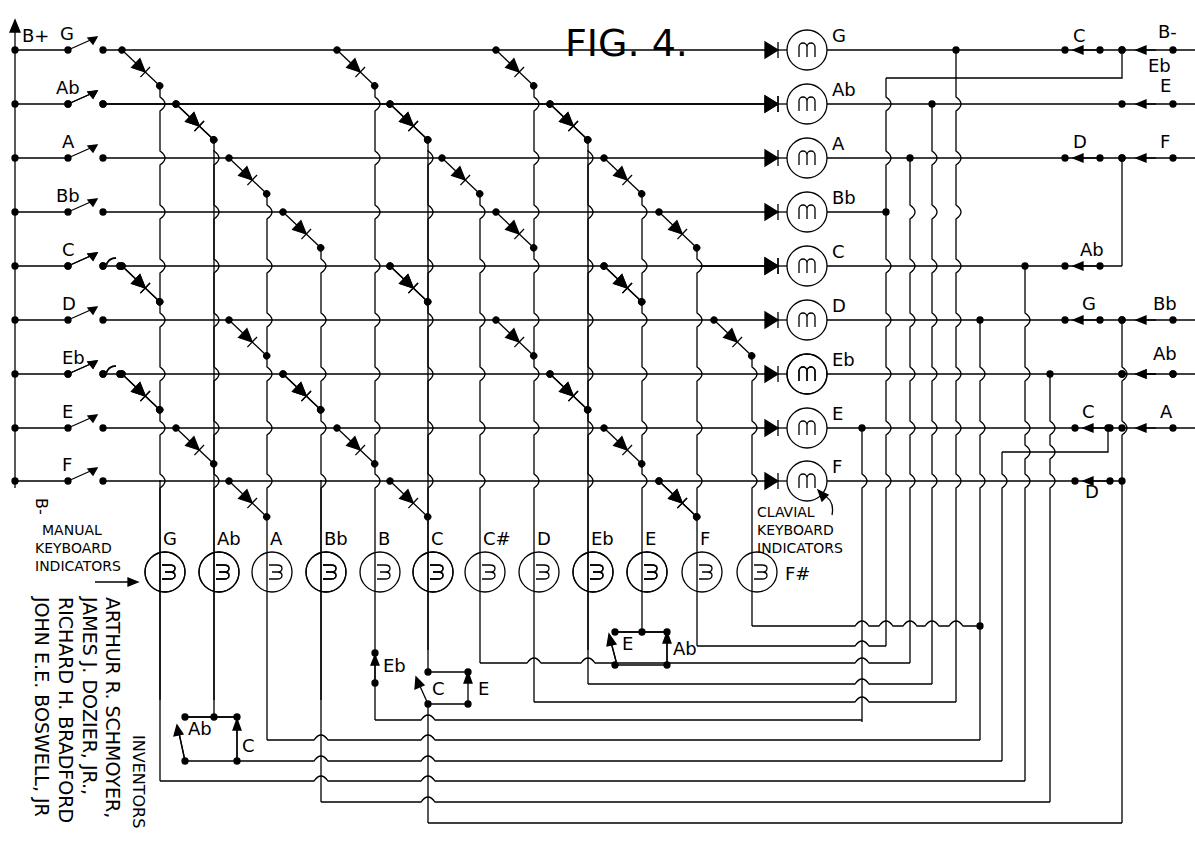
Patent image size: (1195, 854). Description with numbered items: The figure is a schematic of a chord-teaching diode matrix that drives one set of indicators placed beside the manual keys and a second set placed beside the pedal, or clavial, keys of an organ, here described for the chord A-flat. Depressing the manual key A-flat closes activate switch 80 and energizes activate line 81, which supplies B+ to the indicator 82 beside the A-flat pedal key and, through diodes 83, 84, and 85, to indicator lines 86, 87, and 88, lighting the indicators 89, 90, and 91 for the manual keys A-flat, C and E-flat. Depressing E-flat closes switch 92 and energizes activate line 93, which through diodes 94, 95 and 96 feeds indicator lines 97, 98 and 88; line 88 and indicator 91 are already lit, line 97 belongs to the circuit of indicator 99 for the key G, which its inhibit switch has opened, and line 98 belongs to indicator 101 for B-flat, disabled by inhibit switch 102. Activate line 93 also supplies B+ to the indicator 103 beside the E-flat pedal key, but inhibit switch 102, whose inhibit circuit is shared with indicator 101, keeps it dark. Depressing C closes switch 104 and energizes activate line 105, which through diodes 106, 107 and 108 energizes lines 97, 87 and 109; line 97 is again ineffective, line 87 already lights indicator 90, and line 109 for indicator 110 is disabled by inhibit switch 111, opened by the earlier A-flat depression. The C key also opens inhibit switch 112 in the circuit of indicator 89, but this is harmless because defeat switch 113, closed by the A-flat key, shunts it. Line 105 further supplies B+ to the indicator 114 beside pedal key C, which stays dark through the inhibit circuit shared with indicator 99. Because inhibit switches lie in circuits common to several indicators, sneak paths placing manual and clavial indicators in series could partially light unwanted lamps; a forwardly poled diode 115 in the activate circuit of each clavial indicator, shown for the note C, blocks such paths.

The activate switch 80 is at (100, 102).
The activate line 81 is at (300, 104).
The indicator 82 is at (788, 104).
The diode 83 is at (206, 125).
The diode 84 is at (422, 125).
The diode 85 is at (584, 125).
The indicator line 86 is at (214, 186).
The indicator line 87 is at (428, 186).
The indicator line 88 is at (588, 186).
The indicator 89 is at (205, 552).
The indicator 90 is at (421, 592).
The indicator 91 is at (578, 592).
The switch 92 is at (75, 366).
The activate line 93 is at (119, 362).
The diode 94 is at (141, 399).
The diode 95 is at (300, 399).
The diode 96 is at (568, 399).
The indicator line 97 is at (160, 497).
The indicator line 98 is at (321, 497).
The indicator 99 is at (155, 552).
The indicator 101 is at (312, 589).
The inhibit switch 102 is at (1160, 379).
The indicator 103 is at (795, 362).
The switch 104 is at (92, 260).
The activate line 105 is at (127, 255).
The diode 106 is at (137, 292).
The diode 107 is at (406, 291).
The diode 108 is at (620, 291).
The indicator line 109 is at (664, 500).
The indicator 110 is at (637, 590).
The inhibit switch 111 is at (668, 625).
The inhibit switch 112 is at (240, 716).
The defeat switch 113 is at (183, 748).
The indicator 114 is at (788, 262).
The forwardly poled diode 115 is at (746, 277).